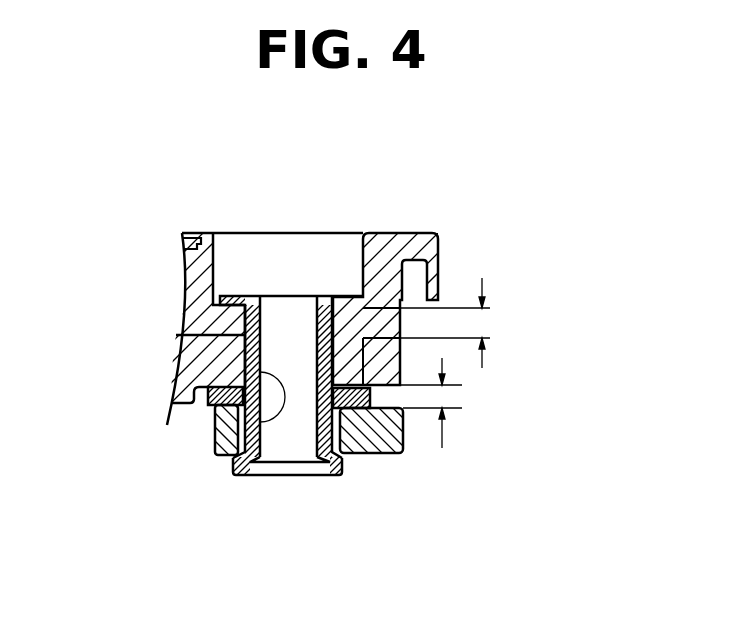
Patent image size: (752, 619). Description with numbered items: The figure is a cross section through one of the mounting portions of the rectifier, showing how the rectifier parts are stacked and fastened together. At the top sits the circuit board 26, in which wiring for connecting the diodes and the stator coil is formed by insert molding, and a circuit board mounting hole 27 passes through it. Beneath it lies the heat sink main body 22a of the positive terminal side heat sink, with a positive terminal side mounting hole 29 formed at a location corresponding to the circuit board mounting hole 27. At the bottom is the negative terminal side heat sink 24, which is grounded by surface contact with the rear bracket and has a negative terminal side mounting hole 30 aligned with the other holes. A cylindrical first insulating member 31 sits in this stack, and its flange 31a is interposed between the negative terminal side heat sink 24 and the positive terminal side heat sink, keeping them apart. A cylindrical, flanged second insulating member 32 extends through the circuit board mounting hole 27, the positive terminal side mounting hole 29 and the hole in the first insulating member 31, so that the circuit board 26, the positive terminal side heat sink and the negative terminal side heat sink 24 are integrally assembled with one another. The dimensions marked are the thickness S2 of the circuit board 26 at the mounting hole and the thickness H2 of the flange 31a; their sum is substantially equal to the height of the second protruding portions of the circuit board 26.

The heat sink main body 22a is at (190, 357).
The flange 31a is at (197, 405).
The positive terminal side mounting hole 29 is at (213, 442).
The second insulating member 32 is at (245, 297).
The circuit board mounting hole 27 is at (320, 302).
The first insulating member 31 is at (235, 472).
The negative terminal side mounting hole 30 is at (300, 462).
The circuit board 26 is at (398, 246).
The negative terminal side heat sink 24 is at (375, 433).
The thickness of the circuit board S2 is at (469, 323).
The thickness of the flange H2 is at (453, 404).